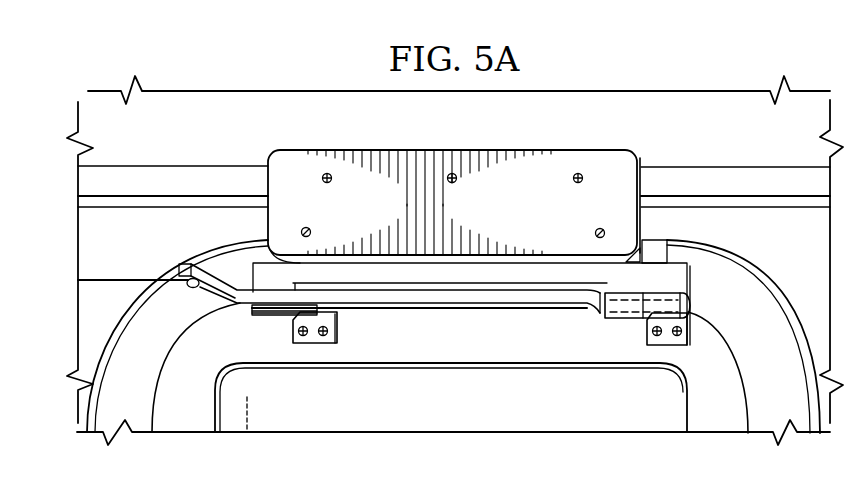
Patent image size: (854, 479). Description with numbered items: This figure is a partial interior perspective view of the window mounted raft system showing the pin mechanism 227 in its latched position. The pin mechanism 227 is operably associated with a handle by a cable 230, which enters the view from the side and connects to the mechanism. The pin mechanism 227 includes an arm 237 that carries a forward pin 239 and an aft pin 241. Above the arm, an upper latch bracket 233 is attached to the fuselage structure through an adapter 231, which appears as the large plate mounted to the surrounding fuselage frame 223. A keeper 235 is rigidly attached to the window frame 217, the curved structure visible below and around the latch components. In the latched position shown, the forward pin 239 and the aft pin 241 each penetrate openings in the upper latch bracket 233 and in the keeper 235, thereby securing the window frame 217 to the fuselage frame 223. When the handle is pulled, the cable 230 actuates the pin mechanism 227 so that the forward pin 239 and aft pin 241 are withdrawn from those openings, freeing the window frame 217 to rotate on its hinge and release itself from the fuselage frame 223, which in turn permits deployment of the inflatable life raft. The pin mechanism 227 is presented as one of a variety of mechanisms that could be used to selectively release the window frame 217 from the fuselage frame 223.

The pin mechanism 227 is at (318, 68).
The fuselage frame 223 is at (86, 246).
The window frame 217 is at (713, 322).
The adapter 231 is at (595, 150).
The upper latch bracket 233 is at (660, 262).
The cable 230 is at (125, 278).
The arm 237 is at (460, 308).
The forward pin 239 is at (265, 318).
The aft pin 241 is at (622, 313).
The keeper 235 is at (673, 345).